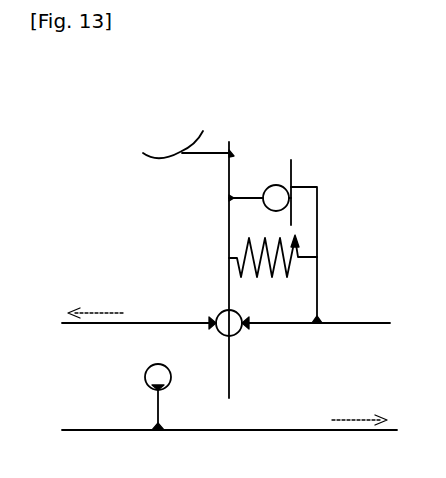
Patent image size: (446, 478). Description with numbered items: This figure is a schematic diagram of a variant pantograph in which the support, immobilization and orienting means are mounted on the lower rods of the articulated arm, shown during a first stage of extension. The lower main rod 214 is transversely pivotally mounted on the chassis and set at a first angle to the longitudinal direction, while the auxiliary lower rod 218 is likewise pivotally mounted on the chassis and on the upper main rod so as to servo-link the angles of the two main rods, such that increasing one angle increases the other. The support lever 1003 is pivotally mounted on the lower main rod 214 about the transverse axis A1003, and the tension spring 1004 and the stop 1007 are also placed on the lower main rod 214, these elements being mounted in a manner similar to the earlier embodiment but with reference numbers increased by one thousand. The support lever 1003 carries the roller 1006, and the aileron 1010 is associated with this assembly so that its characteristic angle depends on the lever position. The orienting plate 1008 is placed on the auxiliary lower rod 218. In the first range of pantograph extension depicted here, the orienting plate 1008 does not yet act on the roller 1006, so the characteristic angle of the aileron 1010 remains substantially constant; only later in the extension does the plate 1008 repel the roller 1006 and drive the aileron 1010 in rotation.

The aileron 1010 is at (156, 141).
The support lever 1003 is at (203, 249).
The stop 1007 is at (297, 183).
The roller 1006 is at (280, 201).
The tension spring 1004 is at (290, 262).
The lower main rod 214 is at (353, 322).
The axis A1003 is at (235, 328).
The orienting plate 1008 is at (155, 374).
The auxiliary lower rod 218 is at (288, 431).